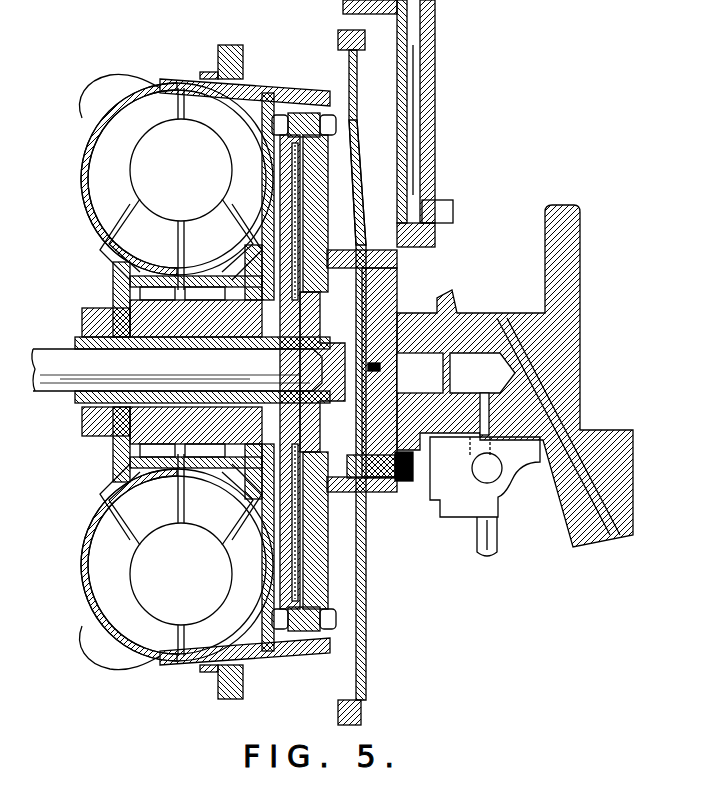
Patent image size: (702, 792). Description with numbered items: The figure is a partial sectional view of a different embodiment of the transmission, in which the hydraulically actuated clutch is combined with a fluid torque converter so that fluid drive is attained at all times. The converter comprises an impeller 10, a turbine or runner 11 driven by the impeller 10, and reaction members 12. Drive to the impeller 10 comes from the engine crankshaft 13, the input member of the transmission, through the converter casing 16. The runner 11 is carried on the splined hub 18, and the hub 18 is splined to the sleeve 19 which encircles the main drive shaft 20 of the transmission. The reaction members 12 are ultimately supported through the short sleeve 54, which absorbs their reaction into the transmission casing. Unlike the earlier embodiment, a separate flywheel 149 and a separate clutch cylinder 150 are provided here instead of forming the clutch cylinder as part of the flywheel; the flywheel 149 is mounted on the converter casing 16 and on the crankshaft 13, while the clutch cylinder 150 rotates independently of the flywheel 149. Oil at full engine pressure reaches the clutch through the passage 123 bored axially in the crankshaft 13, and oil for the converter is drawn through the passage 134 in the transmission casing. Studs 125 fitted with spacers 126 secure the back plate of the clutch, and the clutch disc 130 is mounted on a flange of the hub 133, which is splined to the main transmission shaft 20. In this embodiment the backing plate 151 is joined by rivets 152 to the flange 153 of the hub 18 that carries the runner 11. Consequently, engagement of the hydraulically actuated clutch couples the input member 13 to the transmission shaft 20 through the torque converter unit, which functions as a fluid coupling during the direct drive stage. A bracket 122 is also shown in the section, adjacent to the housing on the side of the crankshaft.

The impeller 10 is at (110, 152).
The turbine or runner 11 is at (203, 113).
The reaction members 12 is at (163, 222).
The engine crankshaft 13 is at (570, 296).
The converter casing 16 is at (262, 79).
The splined hub 18 is at (236, 276).
The sleeve 19 is at (76, 343).
The main drive shaft 20 is at (48, 392).
The short sleeve 54 is at (80, 320).
The bracket 122 is at (500, 487).
The passage 123 is at (375, 365).
The studs 125 is at (338, 612).
The spacers 126 is at (310, 631).
The clutch disc 130 is at (300, 536).
The hub 133 is at (292, 320).
The passage 134 is at (418, 100).
The flywheel 149 is at (358, 108).
The clutch cylinder 150 is at (360, 187).
The backing plate 151 is at (272, 586).
The rivets 152 is at (243, 473).
The flange 153 is at (238, 266).